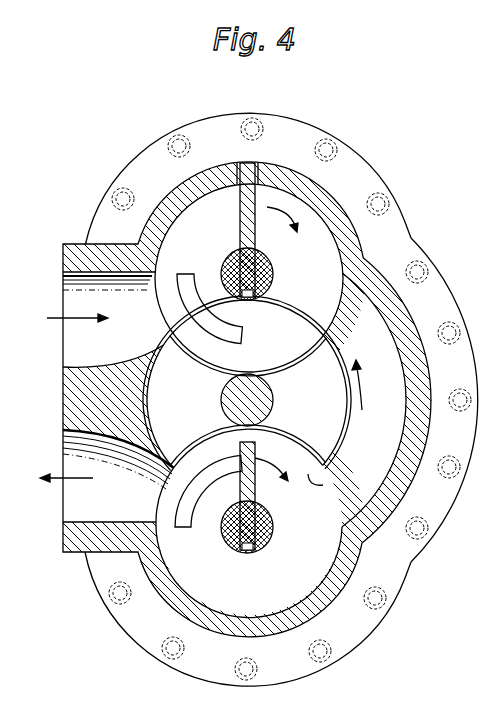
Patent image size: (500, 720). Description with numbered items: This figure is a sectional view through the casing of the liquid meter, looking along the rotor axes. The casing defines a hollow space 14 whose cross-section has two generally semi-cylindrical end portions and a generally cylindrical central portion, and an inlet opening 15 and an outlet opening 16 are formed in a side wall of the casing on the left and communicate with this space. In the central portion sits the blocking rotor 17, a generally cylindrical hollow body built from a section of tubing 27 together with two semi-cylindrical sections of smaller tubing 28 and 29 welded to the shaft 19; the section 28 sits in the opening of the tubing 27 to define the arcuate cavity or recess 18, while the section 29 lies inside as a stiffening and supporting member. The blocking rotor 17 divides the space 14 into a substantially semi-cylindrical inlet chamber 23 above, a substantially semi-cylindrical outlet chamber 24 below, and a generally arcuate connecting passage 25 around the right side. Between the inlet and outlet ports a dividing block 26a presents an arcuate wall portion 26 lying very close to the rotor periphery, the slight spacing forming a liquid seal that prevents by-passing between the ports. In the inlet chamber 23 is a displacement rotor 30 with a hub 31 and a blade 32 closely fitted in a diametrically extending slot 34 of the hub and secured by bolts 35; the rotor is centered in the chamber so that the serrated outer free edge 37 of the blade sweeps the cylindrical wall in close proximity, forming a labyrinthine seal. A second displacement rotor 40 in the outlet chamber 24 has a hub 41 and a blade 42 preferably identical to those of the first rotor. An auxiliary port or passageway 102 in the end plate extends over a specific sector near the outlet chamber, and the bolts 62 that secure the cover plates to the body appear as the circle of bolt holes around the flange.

The hollow space 14 is at (321, 253).
The inlet opening 15 is at (80, 342).
The outlet opening 16 is at (78, 498).
The blocking rotor 17 is at (336, 331).
The cavity or recess 18 is at (327, 487).
The shaft 19 is at (270, 400).
The inlet chamber 23 is at (209, 207).
The outlet chamber 24 is at (203, 590).
The connecting passage 25 is at (377, 468).
The arcuate wall portion 26 is at (150, 400).
The dividing block 26a is at (72, 393).
The section of tubing 27 is at (340, 353).
The semi-cylindrical section of smaller tubing 28 is at (293, 440).
The semi-cylindrical section of smaller tubing 29 is at (287, 357).
The displacement rotor 30 is at (310, 180).
The hub 31 is at (265, 263).
The blade 32 is at (240, 224).
The slot 34 is at (255, 498).
The bolts 35 is at (273, 526).
The outer free edge 37 is at (297, 118).
The second displacement rotor 40 is at (238, 498).
The hub 41 is at (263, 553).
The blade 42 is at (254, 461).
The bolts 62 is at (338, 140).
The auxiliary port or passageway 102 is at (182, 497).